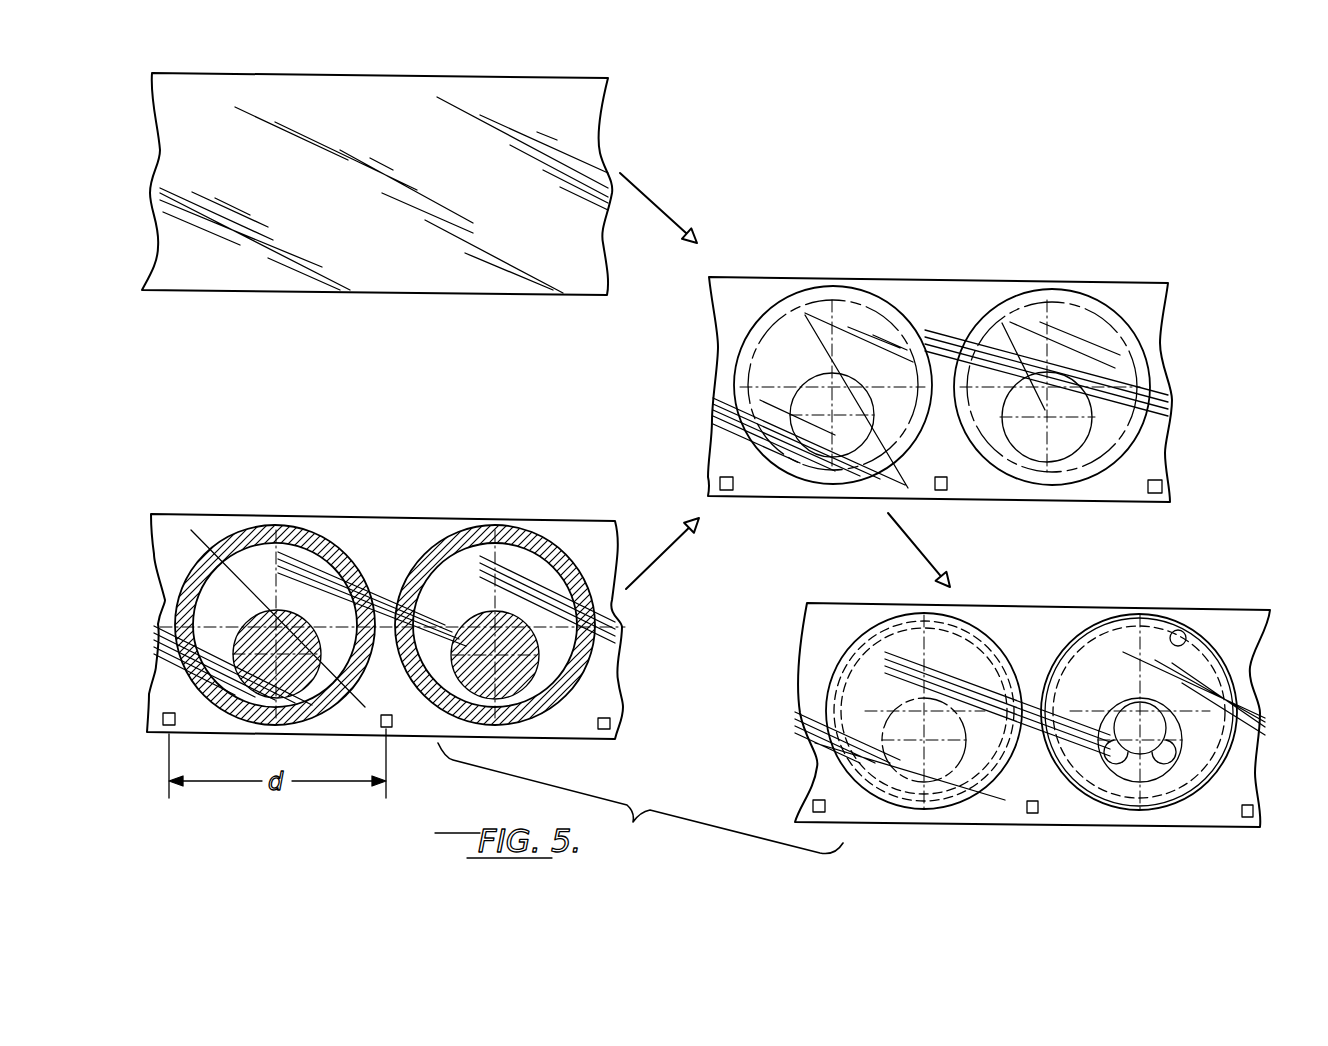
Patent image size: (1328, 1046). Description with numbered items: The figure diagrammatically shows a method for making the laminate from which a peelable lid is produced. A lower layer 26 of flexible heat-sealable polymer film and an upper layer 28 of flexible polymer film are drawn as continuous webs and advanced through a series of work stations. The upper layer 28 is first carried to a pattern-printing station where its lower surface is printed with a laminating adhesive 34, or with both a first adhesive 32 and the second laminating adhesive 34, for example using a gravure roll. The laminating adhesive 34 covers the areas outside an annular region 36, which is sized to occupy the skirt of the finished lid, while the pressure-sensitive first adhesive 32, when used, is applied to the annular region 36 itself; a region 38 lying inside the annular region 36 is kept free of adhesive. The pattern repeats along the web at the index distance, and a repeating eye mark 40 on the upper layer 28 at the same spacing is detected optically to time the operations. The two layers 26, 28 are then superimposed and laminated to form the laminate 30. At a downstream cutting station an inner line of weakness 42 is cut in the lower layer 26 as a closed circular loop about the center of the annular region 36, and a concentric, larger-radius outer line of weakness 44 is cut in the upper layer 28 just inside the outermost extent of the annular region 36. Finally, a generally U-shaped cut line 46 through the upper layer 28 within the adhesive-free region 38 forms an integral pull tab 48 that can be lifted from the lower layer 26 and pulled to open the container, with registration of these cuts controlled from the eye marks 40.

The lower layer 26 is at (272, 267).
The upper layer 28 is at (386, 537).
The laminate 30 is at (985, 278).
The first adhesive 32 is at (882, 312).
The laminating adhesive 34 is at (770, 380).
The annular region 36 is at (782, 297).
The adhesive-free region 38 is at (842, 370).
The eye mark 40 is at (733, 490).
The inner line of weakness 42 is at (1176, 632).
The outer line of weakness 44 is at (1083, 633).
The cut line 46 is at (1127, 703).
The pull tab 48 is at (1153, 740).